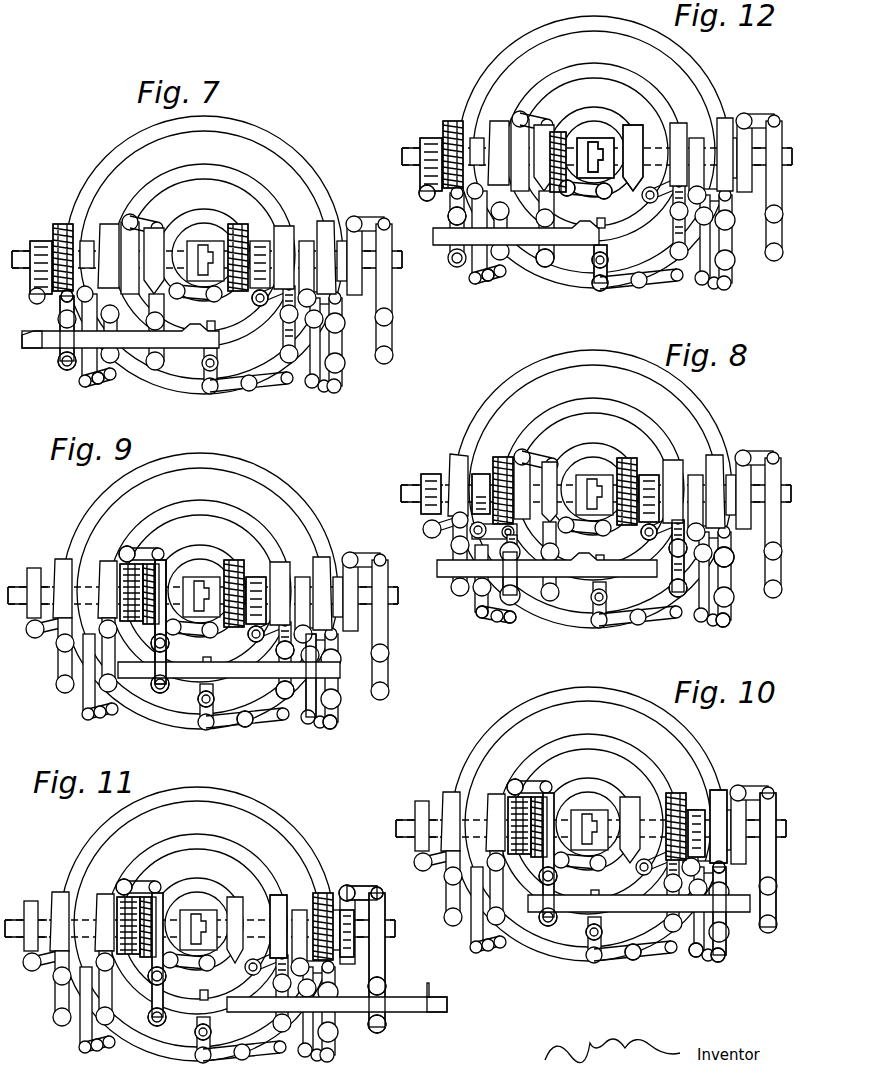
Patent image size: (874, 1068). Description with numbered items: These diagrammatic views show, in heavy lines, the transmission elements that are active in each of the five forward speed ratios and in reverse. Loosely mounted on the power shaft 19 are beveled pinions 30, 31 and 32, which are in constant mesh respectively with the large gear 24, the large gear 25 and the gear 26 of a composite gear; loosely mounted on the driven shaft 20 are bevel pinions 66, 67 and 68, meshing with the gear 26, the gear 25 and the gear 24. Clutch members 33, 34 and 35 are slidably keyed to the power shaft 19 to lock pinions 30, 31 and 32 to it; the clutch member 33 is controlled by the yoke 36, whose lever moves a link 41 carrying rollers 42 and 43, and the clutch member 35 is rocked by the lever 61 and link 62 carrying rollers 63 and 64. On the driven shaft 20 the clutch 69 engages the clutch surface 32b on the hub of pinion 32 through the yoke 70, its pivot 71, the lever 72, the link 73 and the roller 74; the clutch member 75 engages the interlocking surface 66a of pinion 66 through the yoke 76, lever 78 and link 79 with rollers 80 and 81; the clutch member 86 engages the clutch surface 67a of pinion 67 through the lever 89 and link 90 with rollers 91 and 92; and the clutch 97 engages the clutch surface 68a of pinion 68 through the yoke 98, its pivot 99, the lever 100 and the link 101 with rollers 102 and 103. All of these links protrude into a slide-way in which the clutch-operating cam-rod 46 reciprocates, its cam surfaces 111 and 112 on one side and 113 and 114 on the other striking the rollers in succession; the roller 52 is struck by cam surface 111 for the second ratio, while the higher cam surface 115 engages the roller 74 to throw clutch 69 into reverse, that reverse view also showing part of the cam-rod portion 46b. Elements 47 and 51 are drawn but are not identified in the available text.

In FIG. 7, the power shaft 19 is at (29, 240).
In FIG. 12, the power shaft 19 is at (391, 154).
In FIG. 8, the power shaft 19 is at (401, 505).
In FIG. 9, the power shaft 19 is at (26, 574).
In FIG. 10, the power shaft 19 is at (399, 836).
In FIG. 11, the power shaft 19 is at (24, 907).
In FIG. 7, the driven shaft 20 is at (408, 272).
In FIG. 12, the driven shaft 20 is at (799, 145).
In FIG. 8, the driven shaft 20 is at (796, 504).
In FIG. 9, the driven shaft 20 is at (406, 606).
In FIG. 10, the driven shaft 20 is at (796, 838).
In FIG. 11, the driven shaft 20 is at (407, 937).
In FIG. 7, the large gear 24 is at (204, 255).
In FIG. 12, the large gear 24 is at (594, 152).
In FIG. 8, the large gear 24 is at (593, 477).
In FIG. 9, the large gear 24 is at (200, 579).
In FIG. 10, the large gear 24 is at (588, 811).
In FIG. 11, the large gear 24 is at (197, 911).
In FIG. 7, the large gear 25 is at (204, 250).
In FIG. 12, the large gear 25 is at (594, 142).
In FIG. 8, the large gear 25 is at (593, 477).
In FIG. 9, the large gear 25 is at (200, 579).
In FIG. 10, the large gear 25 is at (588, 811).
In FIG. 11, the large gear 25 is at (197, 912).
In FIG. 7, the gear 26 is at (204, 244).
In FIG. 12, the gear 26 is at (594, 143).
In FIG. 8, the gear 26 is at (593, 479).
In FIG. 9, the gear 26 is at (200, 579).
In FIG. 10, the gear 26 is at (588, 812).
In FIG. 11, the gear 26 is at (197, 912).
In FIG. 7, the beveled pinion 30 is at (61, 232).
In FIG. 12, the beveled pinion 30 is at (450, 139).
In FIG. 8, the beveled pinion 31 is at (503, 469).
In FIG. 12, the beveled pinion 32 is at (558, 144).
In FIG. 9, the beveled pinion 32 is at (138, 560).
In FIG. 10, the beveled pinion 32 is at (527, 792).
In FIG. 11, the beveled pinion 32 is at (157, 907).
In FIG. 12, the clutch surface 32b is at (610, 137).
In FIG. 7, the clutch member 33 is at (42, 242).
In FIG. 12, the clutch member 33 is at (428, 149).
In FIG. 8, the clutch member 34 is at (486, 474).
In FIG. 9, the clutch member 35 is at (116, 575).
In FIG. 10, the clutch member 35 is at (505, 808).
In FIG. 11, the clutch member 35 is at (113, 909).
In FIG. 12, the yoke 36 is at (416, 186).
In FIG. 7, the link 41 is at (50, 308).
In FIG. 7, the roller 42 is at (54, 379).
In FIG. 12, the roller 42 is at (444, 218).
In FIG. 7, the roller 43 is at (98, 391).
In FIG. 12, the roller 43 is at (473, 287).
In FIG. 7, the cam-rod 46 is at (120, 336).
In FIG. 12, the cam-rod 46 is at (516, 234).
In FIG. 8, the cam-rod 46 is at (537, 562).
In FIG. 9, the cam-rod 46 is at (229, 671).
In FIG. 10, the cam-rod 46 is at (653, 929).
In FIG. 11, the cam-rod 46 is at (344, 990).
In FIG. 12, the cam-rod portion 46b is at (633, 252).
In FIG. 8, the lever 47 is at (434, 472).
In FIG. 8, the link 51 is at (488, 622).
In FIG. 8, the roller 52 is at (522, 627).
In FIG. 9, the lever 61 is at (117, 537).
In FIG. 10, the lever 61 is at (538, 775).
In FIG. 11, the lever 61 is at (116, 869).
In FIG. 9, the link 62 is at (170, 603).
In FIG. 11, the link 62 is at (142, 960).
In FIG. 9, the roller 63 is at (138, 695).
In FIG. 10, the roller 63 is at (532, 921).
In FIG. 11, the roller 63 is at (170, 986).
In FIG. 9, the roller 64 is at (172, 716).
In FIG. 10, the roller 64 is at (535, 951).
In FIG. 11, the roller 64 is at (166, 1027).
In FIG. 7, the bevel pinion 66 is at (240, 246).
In FIG. 8, the bevel pinion 66 is at (628, 479).
In FIG. 9, the bevel pinion 66 is at (233, 579).
In FIG. 8, the interlocking surface 66a is at (664, 465).
In FIG. 9, the interlocking surface 66a is at (294, 555).
In FIG. 10, the bevel pinion 67 is at (680, 813).
In FIG. 10, the clutch surface 67a is at (720, 795).
In FIG. 11, the bevel pinion 68 is at (306, 913).
In FIG. 11, the clutch surface 68a is at (348, 901).
In FIG. 12, the clutch 69 is at (619, 138).
In FIG. 12, the yoke 70 is at (657, 137).
In FIG. 12, the pivot 71 is at (619, 202).
In FIG. 12, the lever 72 is at (582, 203).
In FIG. 12, the link 73 is at (599, 297).
In FIG. 12, the roller 74 is at (570, 279).
In FIG. 7, the clutch member 75 is at (295, 229).
In FIG. 8, the clutch member 75 is at (667, 481).
In FIG. 9, the clutch member 75 is at (301, 571).
In FIG. 8, the yoke 76 is at (653, 556).
In FIG. 8, the lever 78 is at (688, 572).
In FIG. 8, the link 79 is at (716, 579).
In FIG. 9, the link 79 is at (323, 661).
In FIG. 8, the roller 80 is at (715, 543).
In FIG. 9, the roller 80 is at (258, 647).
In FIG. 8, the roller 81 is at (711, 627).
In FIG. 9, the roller 81 is at (322, 728).
In FIG. 10, the clutch member 86 is at (729, 808).
In FIG. 10, the lever 89 is at (783, 860).
In FIG. 10, the link 90 is at (690, 963).
In FIG. 10, the roller 91 is at (737, 871).
In FIG. 10, the roller 92 is at (731, 965).
In FIG. 11, the clutch 97 is at (317, 933).
In FIG. 11, the yoke 98 is at (368, 881).
In FIG. 11, the pivot 99 is at (352, 881).
In FIG. 11, the lever 100 is at (396, 885).
In FIG. 11, the link 101 is at (399, 960).
In FIG. 11, the roller 102 is at (397, 978).
In FIG. 11, the roller 103 is at (398, 1030).
In FIG. 7, the cam surface 111 is at (64, 358).
In FIG. 8, the cam surface 111 is at (537, 603).
In FIG. 9, the cam surface 111 is at (219, 723).
In FIG. 10, the cam surface 111 is at (577, 959).
In FIG. 9, the cam surface 112 is at (264, 732).
In FIG. 10, the cam surface 112 is at (647, 962).
In FIG. 11, the cam surface 112 is at (446, 1013).
In FIG. 7, the cam surface 113 is at (40, 348).
In FIG. 9, the cam surface 113 is at (156, 653).
In FIG. 10, the cam surface 113 is at (592, 855).
In FIG. 11, the cam surface 113 is at (227, 1026).
In FIG. 9, the cam surface 114 is at (342, 675).
In FIG. 10, the cam surface 114 is at (741, 911).
In FIG. 11, the cam surface 114 is at (443, 969).
In FIG. 12, the cam surface 115 is at (523, 276).